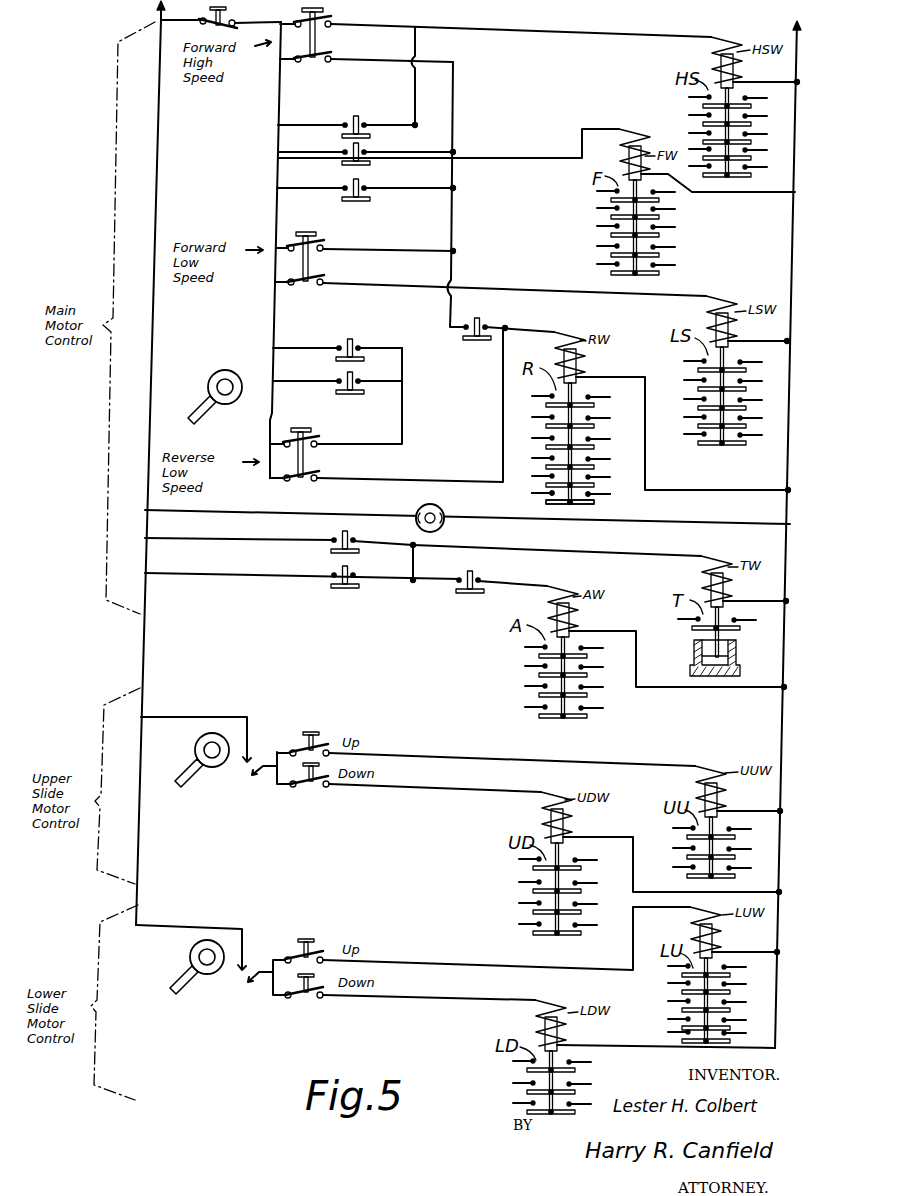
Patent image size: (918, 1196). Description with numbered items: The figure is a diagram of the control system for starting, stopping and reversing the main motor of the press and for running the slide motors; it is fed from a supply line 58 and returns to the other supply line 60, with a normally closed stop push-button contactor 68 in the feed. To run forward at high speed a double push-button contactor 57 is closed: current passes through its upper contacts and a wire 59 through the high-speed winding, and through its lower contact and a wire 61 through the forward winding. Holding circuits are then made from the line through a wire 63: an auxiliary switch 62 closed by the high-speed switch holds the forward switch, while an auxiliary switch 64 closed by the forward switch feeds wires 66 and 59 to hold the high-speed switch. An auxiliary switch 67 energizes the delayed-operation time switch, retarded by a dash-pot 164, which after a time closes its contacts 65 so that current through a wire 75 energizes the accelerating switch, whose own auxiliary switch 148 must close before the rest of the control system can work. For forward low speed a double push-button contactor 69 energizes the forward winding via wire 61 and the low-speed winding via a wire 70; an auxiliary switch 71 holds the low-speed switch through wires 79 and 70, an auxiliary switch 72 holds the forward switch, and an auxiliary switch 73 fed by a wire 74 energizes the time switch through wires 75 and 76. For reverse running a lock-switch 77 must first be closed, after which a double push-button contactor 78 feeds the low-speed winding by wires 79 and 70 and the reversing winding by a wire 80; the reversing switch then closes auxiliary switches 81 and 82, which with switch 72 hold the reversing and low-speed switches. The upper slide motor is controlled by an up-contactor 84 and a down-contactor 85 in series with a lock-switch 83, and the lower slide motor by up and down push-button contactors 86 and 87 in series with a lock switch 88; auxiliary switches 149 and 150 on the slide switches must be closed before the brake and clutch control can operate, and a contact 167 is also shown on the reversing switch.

The double push-button contactor 57 is at (329, 40).
The supply line 58 is at (162, 170).
The wire 59 is at (537, 41).
The supply line 60 is at (797, 112).
The wire 61 is at (507, 157).
The auxiliary switch 62 is at (365, 155).
The wire 63 is at (281, 100).
The auxiliary switch 64 is at (365, 129).
The contacts 65 is at (482, 581).
The wire 66 is at (415, 98).
The auxiliary switch 67 is at (358, 540).
The normally closed push-button contactor 68 is at (226, 21).
The double push-button contactor 69 is at (322, 265).
The wire 70 is at (506, 292).
The auxiliary switch 71 is at (360, 348).
The auxiliary switch 72 is at (365, 190).
The auxiliary switch 73 is at (355, 576).
The wire 74 is at (268, 586).
The wire 75 is at (413, 572).
The wire 76 is at (552, 557).
The lock-switch 77 is at (254, 419).
The double push-button contactor 78 is at (312, 463).
The wire 79 is at (440, 318).
The wire 80 is at (421, 480).
The auxiliary switch 81 is at (490, 326).
The auxiliary switch 82 is at (360, 380).
The lock-switch 83 is at (243, 781).
The up-contactor 84 is at (325, 750).
The down-contactor 85 is at (320, 786).
The up push-button contactor 86 is at (326, 957).
The down push-button contactor 87 is at (315, 998).
The lock switch 88 is at (229, 989).
The auxiliary switch 148 is at (583, 714).
The auxiliary switch 149 is at (566, 942).
The auxiliary switch 150 is at (732, 1043).
The dash-pot 164 is at (738, 651).
The contact 167 is at (583, 506).